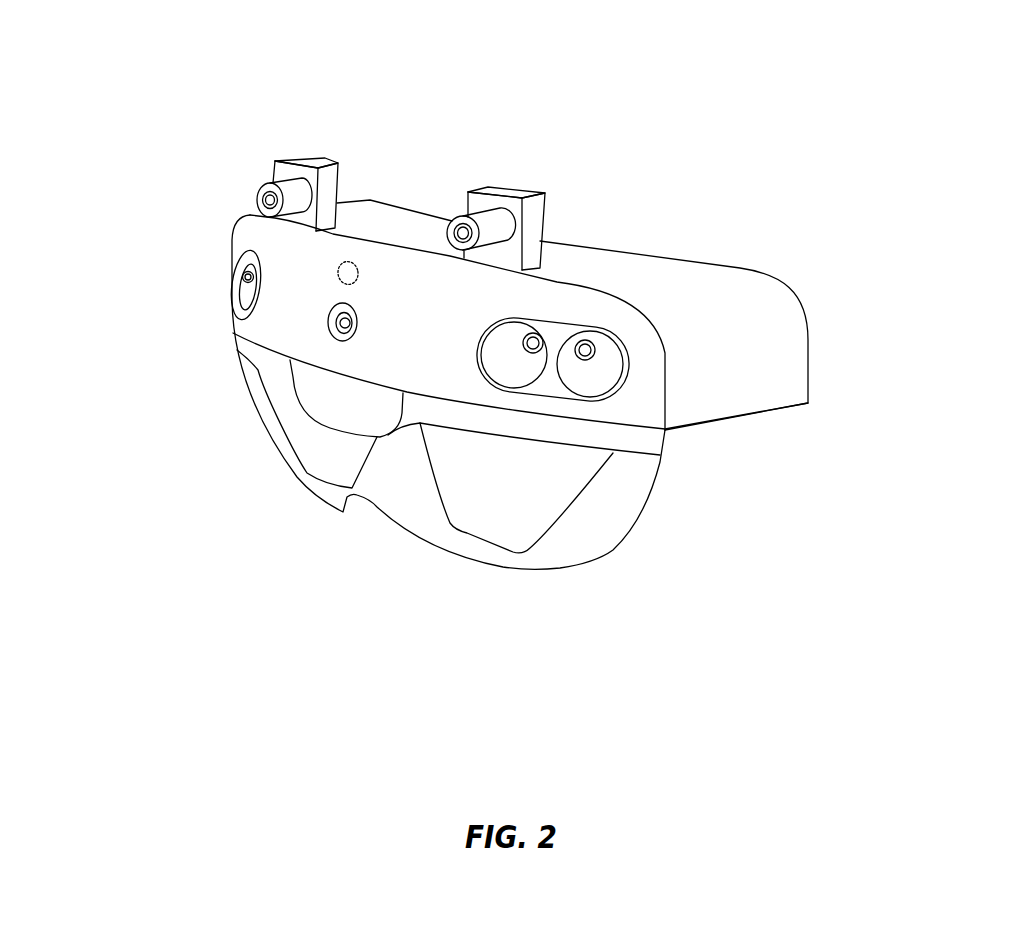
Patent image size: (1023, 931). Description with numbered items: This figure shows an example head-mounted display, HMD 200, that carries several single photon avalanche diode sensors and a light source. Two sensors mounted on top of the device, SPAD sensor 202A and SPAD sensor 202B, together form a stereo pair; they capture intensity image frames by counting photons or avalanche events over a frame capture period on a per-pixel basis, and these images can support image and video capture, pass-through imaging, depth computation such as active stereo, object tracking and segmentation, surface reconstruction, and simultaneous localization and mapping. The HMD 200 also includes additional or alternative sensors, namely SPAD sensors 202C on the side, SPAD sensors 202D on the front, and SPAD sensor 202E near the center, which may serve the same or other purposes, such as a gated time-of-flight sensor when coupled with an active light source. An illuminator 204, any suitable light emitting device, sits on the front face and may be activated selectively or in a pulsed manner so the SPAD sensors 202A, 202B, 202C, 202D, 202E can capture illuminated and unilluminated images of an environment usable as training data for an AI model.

The HMD 200 is at (707, 423).
The SPAD sensor 202A is at (262, 160).
The SPAD sensor 202B is at (550, 181).
The SPAD sensor 202C is at (220, 263).
The SPAD sensors 202D is at (657, 364).
The SPAD sensor 202E is at (312, 330).
The illuminator 204 is at (361, 260).